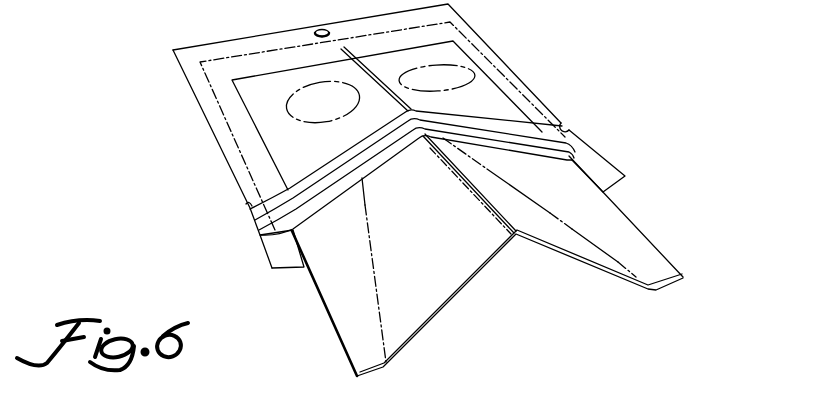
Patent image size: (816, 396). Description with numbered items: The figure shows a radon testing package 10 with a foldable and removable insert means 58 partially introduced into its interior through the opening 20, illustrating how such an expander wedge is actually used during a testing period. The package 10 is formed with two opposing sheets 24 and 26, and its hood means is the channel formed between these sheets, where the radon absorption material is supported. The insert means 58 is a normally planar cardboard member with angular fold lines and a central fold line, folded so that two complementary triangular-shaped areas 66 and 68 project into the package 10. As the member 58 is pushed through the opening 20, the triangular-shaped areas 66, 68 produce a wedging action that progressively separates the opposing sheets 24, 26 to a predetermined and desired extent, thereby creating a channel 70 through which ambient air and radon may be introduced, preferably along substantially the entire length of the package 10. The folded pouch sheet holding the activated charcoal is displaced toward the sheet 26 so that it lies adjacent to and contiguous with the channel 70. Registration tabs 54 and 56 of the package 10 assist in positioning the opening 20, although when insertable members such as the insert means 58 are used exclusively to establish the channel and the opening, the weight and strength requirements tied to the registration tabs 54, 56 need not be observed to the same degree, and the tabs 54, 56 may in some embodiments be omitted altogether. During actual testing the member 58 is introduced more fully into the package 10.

The testing package 10 is at (560, 70).
The opening 20 is at (350, 185).
The sheet 24 is at (245, 140).
The sheet 26 is at (263, 247).
The registration tab 54 is at (247, 203).
The registration tab 56 is at (566, 126).
The foldable and removable insert means 58 is at (637, 228).
The triangular-shaped area 66 is at (440, 254).
The triangular-shaped area 68 is at (552, 234).
The channel 70 is at (505, 272).